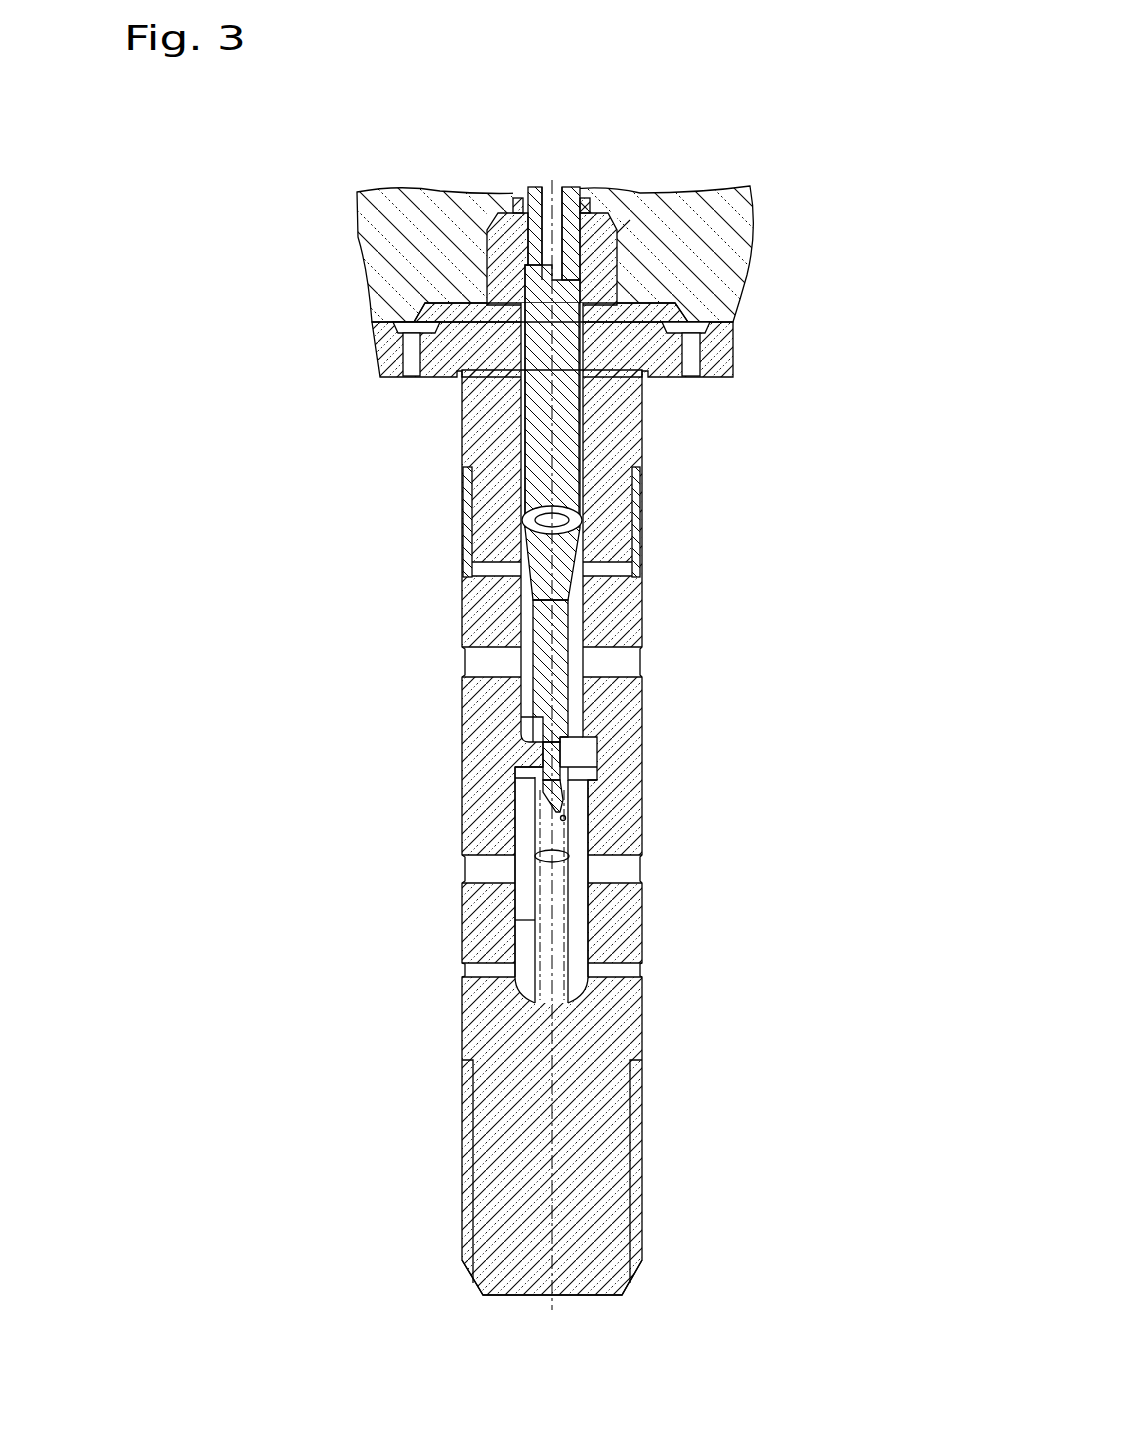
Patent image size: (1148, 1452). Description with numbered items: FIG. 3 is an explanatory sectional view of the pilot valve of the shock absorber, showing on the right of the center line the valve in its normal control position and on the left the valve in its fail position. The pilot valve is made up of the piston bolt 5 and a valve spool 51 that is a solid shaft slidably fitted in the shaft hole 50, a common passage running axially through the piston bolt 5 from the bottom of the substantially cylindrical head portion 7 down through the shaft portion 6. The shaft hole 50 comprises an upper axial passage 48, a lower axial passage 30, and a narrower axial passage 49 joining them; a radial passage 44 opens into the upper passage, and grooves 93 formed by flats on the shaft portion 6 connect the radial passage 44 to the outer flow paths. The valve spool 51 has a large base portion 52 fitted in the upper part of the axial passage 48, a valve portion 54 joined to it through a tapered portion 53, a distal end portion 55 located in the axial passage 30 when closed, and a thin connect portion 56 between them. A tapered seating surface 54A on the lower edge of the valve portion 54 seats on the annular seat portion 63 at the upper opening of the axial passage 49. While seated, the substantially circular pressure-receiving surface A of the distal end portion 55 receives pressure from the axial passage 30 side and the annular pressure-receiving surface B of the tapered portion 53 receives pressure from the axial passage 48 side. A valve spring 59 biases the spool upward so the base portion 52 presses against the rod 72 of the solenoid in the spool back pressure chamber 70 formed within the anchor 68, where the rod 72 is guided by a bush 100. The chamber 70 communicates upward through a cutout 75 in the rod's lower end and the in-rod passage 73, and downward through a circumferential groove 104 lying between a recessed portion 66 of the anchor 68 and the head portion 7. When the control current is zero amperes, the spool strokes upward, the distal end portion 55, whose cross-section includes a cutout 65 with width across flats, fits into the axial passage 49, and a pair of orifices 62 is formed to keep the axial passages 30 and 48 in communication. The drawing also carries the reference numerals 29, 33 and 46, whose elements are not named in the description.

The piston bolt 5 is at (460, 1242).
The shaft portion 6 is at (613, 1210).
The head portion 7 is at (722, 348).
The groove 29 is at (632, 968).
The axial passage 30 is at (585, 990).
The groove 33 is at (613, 872).
The radial passage 44 is at (640, 572).
The groove 46 is at (613, 665).
The axial passage 48 is at (525, 610).
The axial passage 49 is at (563, 740).
The shaft hole 50 is at (518, 990).
The valve spool 51 is at (520, 420).
The base portion 52 is at (522, 350).
The tapered portion 53 is at (472, 565).
The valve portion 54 is at (563, 627).
The tapered seating surface 54A is at (538, 722).
The distal end portion 55 is at (590, 803).
The connect portion 56 is at (592, 757).
The valve spring 59 is at (490, 932).
The orifices 62 is at (520, 773).
The annular seat portion 63 is at (522, 727).
The cutout 65 is at (530, 790).
The recessed portion 66 is at (428, 300).
The anchor 68 is at (425, 207).
The spool back pressure chamber 70 is at (612, 283).
The rod 72 is at (570, 190).
The in-rod passage 73 is at (550, 190).
The cutout 75 is at (520, 250).
The grooves 93 is at (468, 522).
The bush 100 is at (603, 282).
The circumferential groove 104 is at (663, 312).
The pressure-receiving surface A is at (580, 854).
The pressure-receiving surface B is at (580, 503).